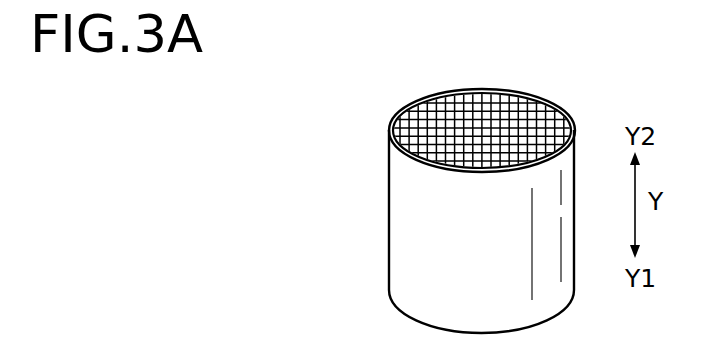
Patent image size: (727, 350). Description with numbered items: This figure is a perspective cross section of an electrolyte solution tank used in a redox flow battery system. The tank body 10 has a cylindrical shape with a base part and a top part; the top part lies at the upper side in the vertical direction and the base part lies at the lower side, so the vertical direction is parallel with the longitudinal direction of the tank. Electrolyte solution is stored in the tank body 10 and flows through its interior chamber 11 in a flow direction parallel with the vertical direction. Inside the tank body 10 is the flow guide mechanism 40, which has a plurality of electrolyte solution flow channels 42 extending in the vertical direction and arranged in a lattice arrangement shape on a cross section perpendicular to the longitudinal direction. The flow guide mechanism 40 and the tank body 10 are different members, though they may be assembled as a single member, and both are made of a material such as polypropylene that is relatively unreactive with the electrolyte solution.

The tank body 10 is at (397, 212).
The interior chamber 11 is at (517, 103).
The flow guide mechanism 40 is at (476, 106).
The electrolyte solution flow channels 42 is at (425, 127).